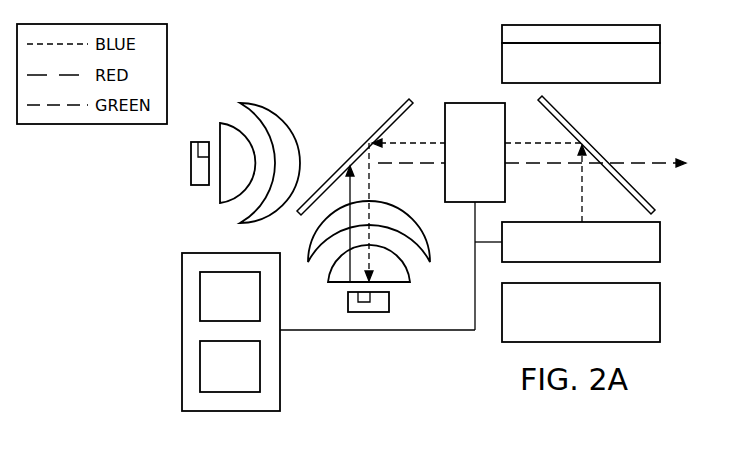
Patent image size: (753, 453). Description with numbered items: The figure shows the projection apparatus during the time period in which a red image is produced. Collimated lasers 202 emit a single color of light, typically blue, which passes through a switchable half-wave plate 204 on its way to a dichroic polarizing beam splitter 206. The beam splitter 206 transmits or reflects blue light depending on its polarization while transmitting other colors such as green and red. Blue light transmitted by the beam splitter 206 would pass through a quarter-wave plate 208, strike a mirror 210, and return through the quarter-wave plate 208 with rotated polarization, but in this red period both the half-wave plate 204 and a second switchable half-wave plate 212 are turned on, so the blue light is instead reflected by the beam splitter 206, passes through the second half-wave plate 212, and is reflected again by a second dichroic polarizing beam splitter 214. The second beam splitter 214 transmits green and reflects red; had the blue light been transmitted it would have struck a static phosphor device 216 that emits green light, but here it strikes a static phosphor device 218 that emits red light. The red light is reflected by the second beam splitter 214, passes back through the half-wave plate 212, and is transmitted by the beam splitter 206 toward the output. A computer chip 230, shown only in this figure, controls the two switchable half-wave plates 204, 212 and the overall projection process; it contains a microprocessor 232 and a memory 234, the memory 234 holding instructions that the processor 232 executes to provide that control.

The collimated lasers 202 is at (660, 312).
The switchable half-wave plate 204 is at (660, 250).
The dichroic polarizing beam splitter 206 is at (608, 127).
The quarter-wave plate 208 is at (655, 62).
The mirror 210 is at (655, 33).
The second switchable half-wave plate 212 is at (476, 103).
The second dichroic polarizing beam splitter 214 is at (365, 143).
The static phosphor device 216 is at (190, 162).
The static phosphor device 218 is at (389, 302).
The computer chip 230 is at (174, 320).
The microprocessor 232 is at (230, 296).
The memory 234 is at (230, 366).